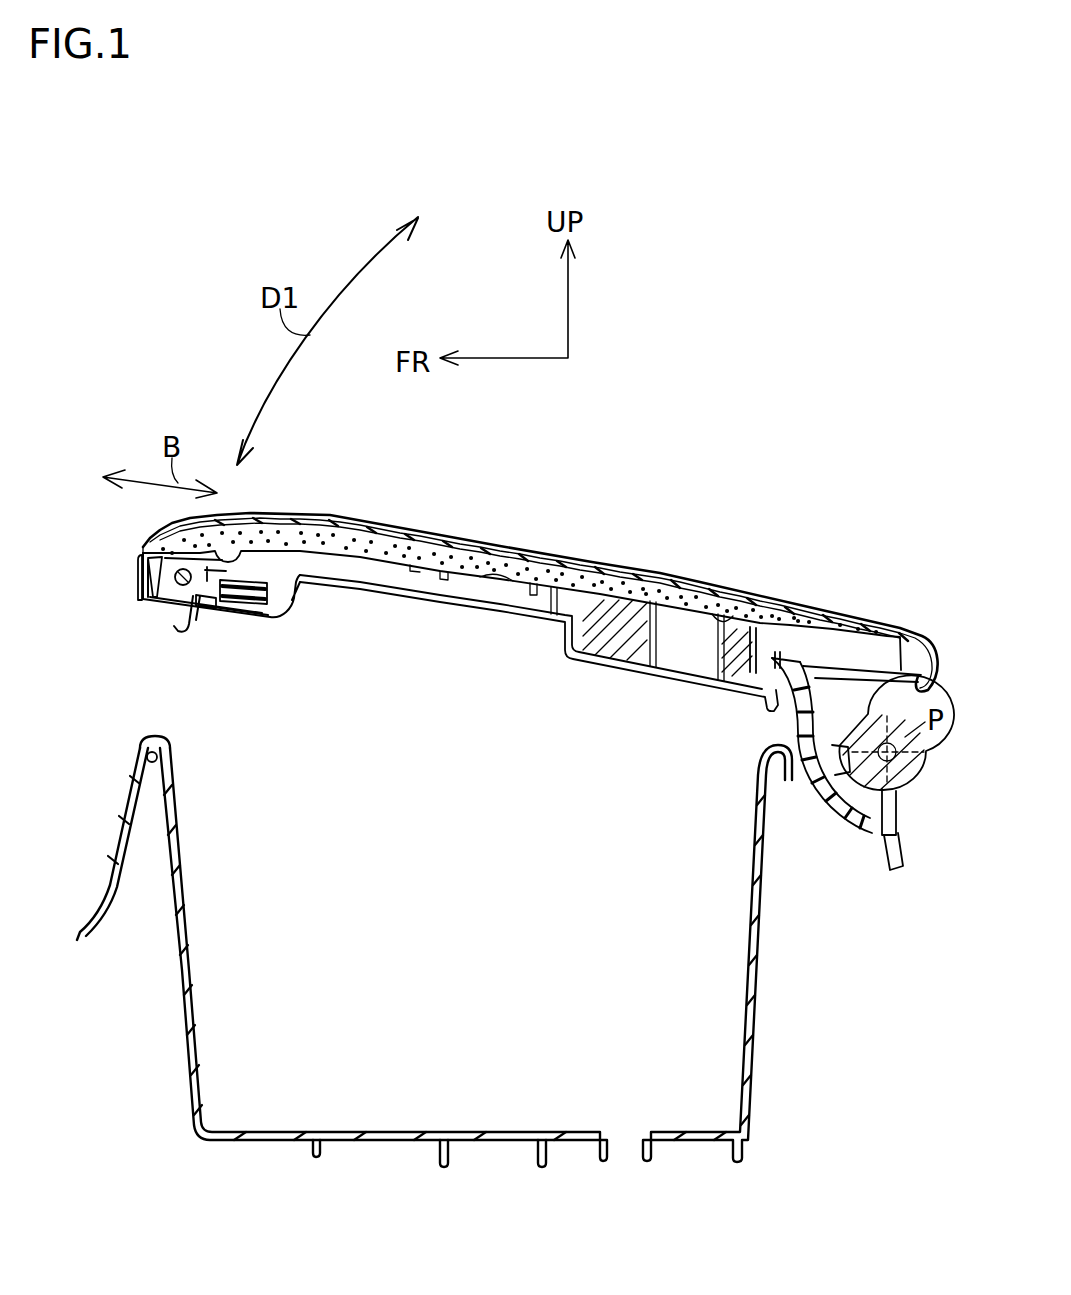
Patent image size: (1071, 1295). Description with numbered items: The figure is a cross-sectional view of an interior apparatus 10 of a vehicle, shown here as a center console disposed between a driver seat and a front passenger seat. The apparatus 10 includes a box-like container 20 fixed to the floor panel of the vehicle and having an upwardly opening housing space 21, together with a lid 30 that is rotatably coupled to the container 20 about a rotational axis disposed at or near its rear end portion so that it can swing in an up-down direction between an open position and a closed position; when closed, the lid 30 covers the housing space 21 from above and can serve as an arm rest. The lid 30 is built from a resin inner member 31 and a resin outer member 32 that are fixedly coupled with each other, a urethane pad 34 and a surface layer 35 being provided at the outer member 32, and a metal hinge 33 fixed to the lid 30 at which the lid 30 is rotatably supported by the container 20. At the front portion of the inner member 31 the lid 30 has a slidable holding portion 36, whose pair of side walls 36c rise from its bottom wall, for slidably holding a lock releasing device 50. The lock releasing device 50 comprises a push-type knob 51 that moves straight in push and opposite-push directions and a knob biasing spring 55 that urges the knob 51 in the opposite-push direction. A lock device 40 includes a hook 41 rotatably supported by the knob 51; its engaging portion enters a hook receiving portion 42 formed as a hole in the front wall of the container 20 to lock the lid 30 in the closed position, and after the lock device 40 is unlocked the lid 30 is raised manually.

The interior apparatus 10 is at (698, 475).
The container 20 is at (190, 1055).
The housing space 21 is at (192, 912).
The lid 30 is at (592, 563).
The inner member 31 is at (400, 590).
The outer member 32 is at (360, 560).
The hinge 33 is at (835, 815).
The urethane pad 34 is at (428, 547).
The surface layer 35 is at (484, 546).
The slidable holding portion 36 is at (240, 614).
The side walls 36c is at (215, 617).
The lock device 40 is at (177, 630).
The hook 41 is at (197, 613).
The hook receiving portion 42 is at (172, 757).
The lock releasing device 50 is at (138, 562).
The knob 51 is at (138, 592).
The knob biasing spring 55 is at (266, 578).